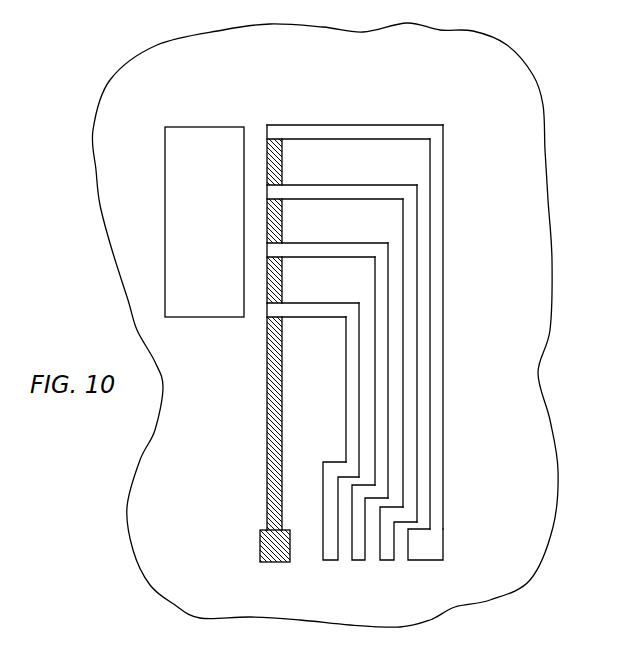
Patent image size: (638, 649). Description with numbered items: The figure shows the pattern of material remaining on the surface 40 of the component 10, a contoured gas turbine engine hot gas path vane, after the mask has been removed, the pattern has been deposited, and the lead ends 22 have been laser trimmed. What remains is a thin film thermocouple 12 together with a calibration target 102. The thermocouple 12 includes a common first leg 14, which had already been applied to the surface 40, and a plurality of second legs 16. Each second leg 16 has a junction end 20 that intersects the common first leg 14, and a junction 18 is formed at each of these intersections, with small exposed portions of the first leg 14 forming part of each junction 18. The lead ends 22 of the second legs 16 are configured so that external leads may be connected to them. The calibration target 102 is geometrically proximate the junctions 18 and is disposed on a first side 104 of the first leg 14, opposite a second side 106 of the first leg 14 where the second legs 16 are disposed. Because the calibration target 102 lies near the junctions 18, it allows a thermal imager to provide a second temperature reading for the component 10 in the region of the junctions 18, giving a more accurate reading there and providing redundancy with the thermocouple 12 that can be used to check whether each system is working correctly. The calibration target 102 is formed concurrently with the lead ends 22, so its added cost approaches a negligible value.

The component 10 is at (531, 145).
The thin film thermocouple 12 is at (365, 331).
The common first leg 14 is at (275, 563).
The second legs 16 is at (437, 328).
The junctions 18 is at (267, 308).
The junction ends 20 is at (340, 125).
The lead ends 22 is at (360, 550).
The surface 40 is at (292, 89).
The calibration target 102 is at (205, 127).
The first side 104 is at (240, 467).
The second side 106 is at (505, 424).